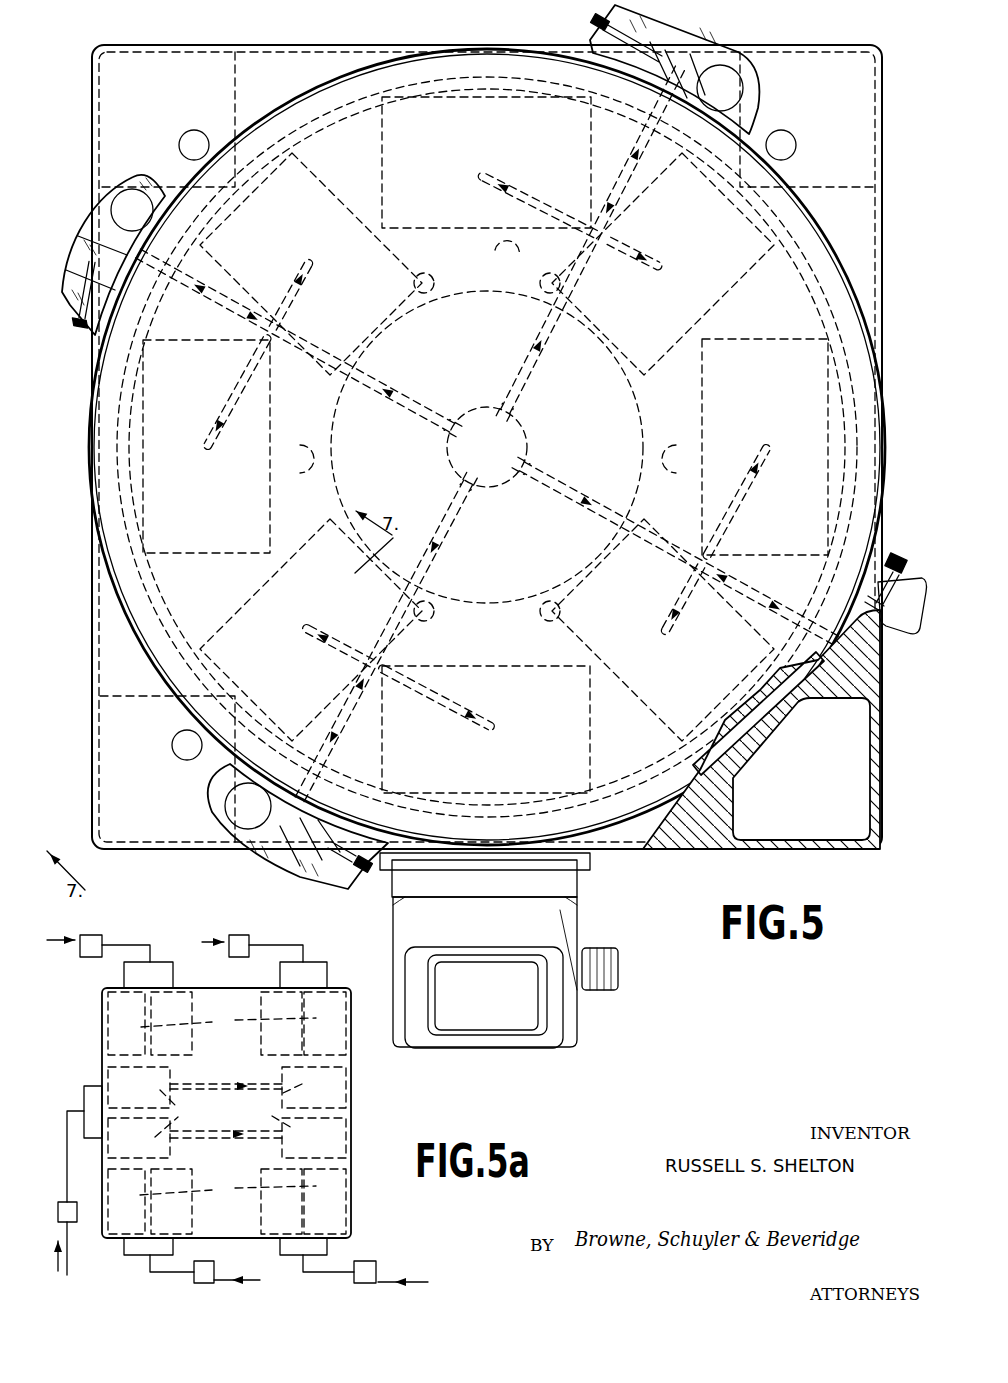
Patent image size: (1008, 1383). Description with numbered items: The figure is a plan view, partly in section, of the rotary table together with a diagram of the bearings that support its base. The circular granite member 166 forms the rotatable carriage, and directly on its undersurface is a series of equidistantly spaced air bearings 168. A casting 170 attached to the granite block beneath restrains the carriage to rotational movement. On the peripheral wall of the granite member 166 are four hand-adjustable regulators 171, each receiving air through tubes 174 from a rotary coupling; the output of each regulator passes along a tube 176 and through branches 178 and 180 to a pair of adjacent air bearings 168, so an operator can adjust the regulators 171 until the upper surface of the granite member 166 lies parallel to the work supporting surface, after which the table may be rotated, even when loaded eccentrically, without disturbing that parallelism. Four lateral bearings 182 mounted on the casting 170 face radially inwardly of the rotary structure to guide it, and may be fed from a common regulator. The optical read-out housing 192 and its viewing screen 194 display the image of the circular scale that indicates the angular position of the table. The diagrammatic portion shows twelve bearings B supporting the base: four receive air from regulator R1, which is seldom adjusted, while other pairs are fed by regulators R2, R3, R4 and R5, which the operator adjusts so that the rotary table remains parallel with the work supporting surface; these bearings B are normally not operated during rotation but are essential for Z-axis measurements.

In FIG. 5, the granite member 166 is at (504, 560).
In FIG. 5, the air bearings 168 is at (512, 254).
In FIG. 5, the casting 170 is at (110, 84).
In FIG. 5, the hand-adjustable regulators 171 is at (94, 247).
In FIG. 5, the tubes 174 is at (447, 455).
In FIG. 5, the tube 176 is at (268, 303).
In FIG. 5, the branch 178 is at (488, 175).
In FIG. 5, the branch 180 is at (243, 381).
In FIG. 5, the bearings 182 is at (293, 143).
In FIG. 5, the housing 192 is at (471, 932).
In FIG. 5, the viewing screen 194 is at (472, 1000).
In FIG. 5a, the regulator R1 is at (72, 1206).
In FIG. 5a, the regulator R2 is at (365, 1283).
In FIG. 5a, the regulator R3 is at (247, 942).
In FIG. 5a, the regulator R4 is at (100, 942).
In FIG. 5a, the regulator R5 is at (208, 1283).
In FIG. 5a, the bearings B is at (228, 1107).